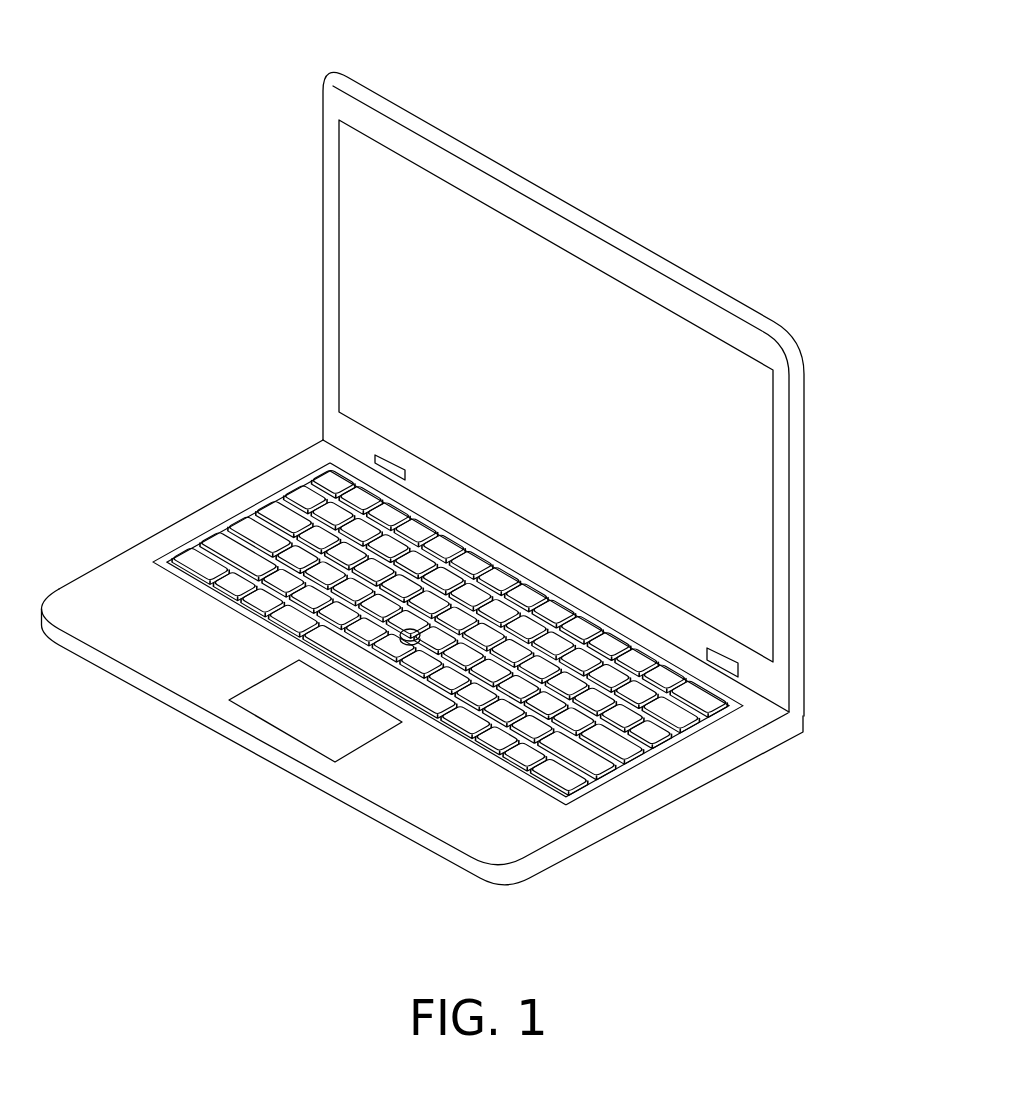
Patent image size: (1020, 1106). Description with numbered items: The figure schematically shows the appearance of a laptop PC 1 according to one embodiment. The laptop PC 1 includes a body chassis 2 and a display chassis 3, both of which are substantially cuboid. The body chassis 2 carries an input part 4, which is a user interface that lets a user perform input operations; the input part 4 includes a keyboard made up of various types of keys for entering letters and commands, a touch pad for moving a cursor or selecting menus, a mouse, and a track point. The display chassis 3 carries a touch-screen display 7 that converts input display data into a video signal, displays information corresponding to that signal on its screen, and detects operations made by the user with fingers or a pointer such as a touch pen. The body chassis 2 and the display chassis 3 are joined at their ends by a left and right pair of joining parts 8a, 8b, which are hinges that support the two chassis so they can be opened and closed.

The laptop PC 1 is at (558, 82).
The body chassis 2 is at (667, 822).
The display chassis 3 is at (833, 528).
The input part 4 is at (176, 523).
The touch-screen display 7 is at (362, 293).
The joining part 8a is at (392, 466).
The joining part 8b is at (722, 652).